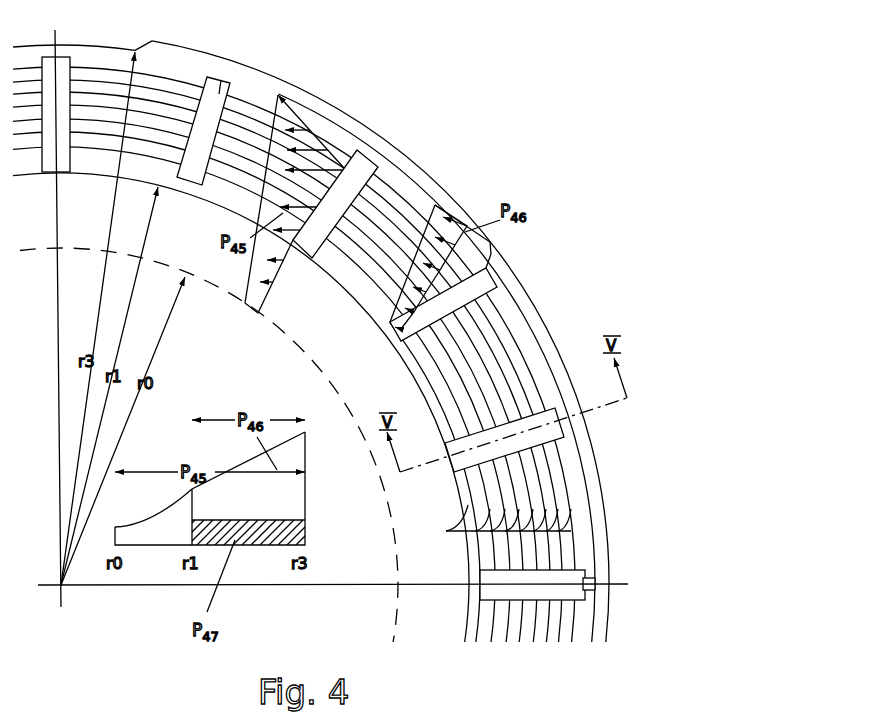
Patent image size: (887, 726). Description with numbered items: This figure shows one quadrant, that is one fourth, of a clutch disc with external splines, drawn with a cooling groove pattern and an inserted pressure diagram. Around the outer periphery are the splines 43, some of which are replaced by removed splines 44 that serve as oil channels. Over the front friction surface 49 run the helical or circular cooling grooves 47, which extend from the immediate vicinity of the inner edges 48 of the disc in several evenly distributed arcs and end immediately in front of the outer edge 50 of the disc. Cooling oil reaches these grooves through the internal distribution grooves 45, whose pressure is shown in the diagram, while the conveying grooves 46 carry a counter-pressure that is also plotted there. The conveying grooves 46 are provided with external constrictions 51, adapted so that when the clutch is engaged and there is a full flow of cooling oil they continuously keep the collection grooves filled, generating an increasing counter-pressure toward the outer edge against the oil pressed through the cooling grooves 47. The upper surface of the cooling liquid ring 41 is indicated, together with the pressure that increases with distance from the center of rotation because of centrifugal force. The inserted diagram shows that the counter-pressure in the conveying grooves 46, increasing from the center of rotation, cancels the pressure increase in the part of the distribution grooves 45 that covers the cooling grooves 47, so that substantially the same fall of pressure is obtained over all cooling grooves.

The cooling liquid ring 41 is at (312, 372).
The splines 43 is at (334, 108).
The removed splines 44 is at (532, 325).
The internal distribution grooves 45 is at (313, 247).
The conveying grooves 46 is at (215, 107).
The cooling grooves 47 is at (465, 527).
The inner edges 48 is at (408, 365).
The front friction surface 49 is at (498, 392).
The outer edge 50 is at (505, 293).
The external constrictions 51 is at (217, 88).